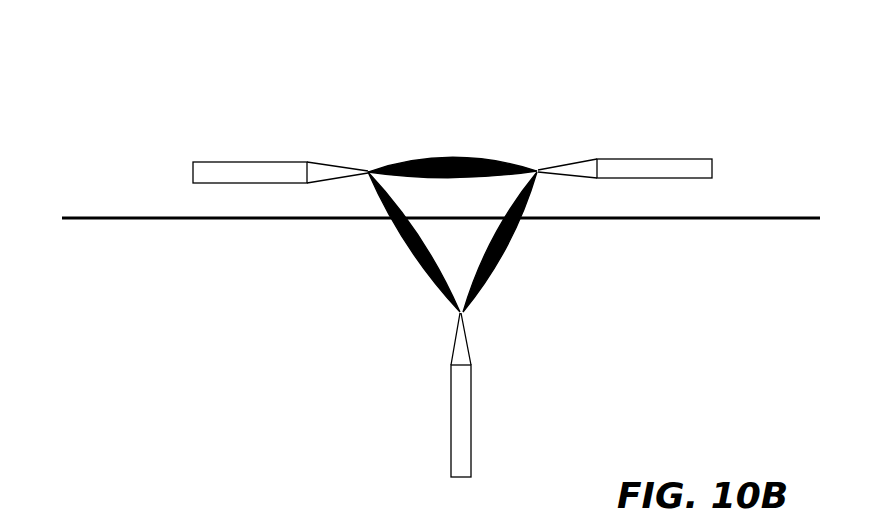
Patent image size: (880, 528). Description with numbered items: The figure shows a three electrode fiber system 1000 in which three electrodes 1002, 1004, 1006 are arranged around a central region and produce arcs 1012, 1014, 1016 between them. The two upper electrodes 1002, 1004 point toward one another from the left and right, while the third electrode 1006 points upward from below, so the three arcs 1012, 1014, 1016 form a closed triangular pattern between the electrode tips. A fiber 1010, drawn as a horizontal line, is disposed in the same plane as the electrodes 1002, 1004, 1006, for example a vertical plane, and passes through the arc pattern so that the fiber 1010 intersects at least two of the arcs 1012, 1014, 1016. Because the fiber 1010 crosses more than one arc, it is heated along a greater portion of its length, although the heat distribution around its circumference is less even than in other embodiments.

The three electrode fiber system 1000 is at (165, 47).
The electrode 1002 is at (268, 162).
The electrode 1004 is at (647, 158).
The electrode 1006 is at (503, 395).
The fiber 1010 is at (93, 220).
The arc 1012 is at (478, 163).
The arc 1014 is at (525, 230).
The arc 1016 is at (396, 240).